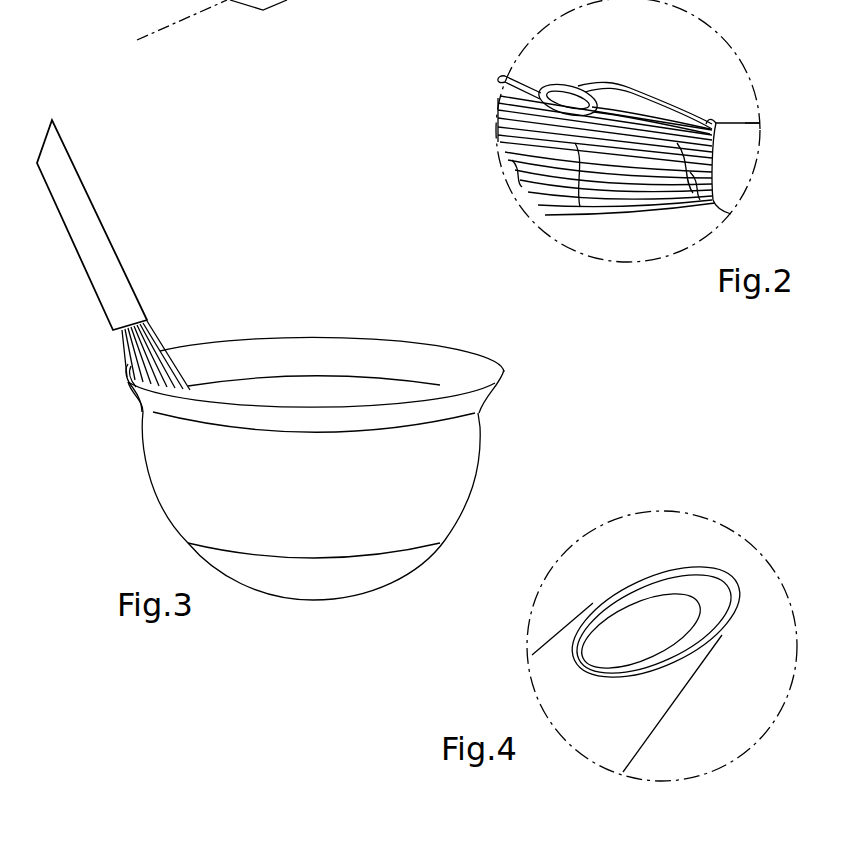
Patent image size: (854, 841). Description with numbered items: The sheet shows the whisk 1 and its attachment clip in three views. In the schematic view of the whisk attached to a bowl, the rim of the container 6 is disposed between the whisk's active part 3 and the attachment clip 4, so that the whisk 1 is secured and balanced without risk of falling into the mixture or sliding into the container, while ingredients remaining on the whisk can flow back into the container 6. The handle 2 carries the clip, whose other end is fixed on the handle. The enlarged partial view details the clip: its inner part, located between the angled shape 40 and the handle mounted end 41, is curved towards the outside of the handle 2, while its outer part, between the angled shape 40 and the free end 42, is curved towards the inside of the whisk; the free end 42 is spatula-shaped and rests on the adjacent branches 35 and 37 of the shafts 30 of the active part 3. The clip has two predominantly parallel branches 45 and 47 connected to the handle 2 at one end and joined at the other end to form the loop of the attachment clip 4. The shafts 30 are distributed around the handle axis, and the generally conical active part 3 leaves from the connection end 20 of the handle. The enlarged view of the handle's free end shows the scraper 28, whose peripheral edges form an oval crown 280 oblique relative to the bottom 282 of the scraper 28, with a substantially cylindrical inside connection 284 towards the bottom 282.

In FIG. 3, the whisk 1 is at (113, 257).
In FIG. 3, the handle 2 is at (98, 213).
In FIG. 2, the handle 2 is at (752, 123).
In FIG. 3, the active part 3 is at (150, 325).
In FIG. 2, the active part 3 is at (576, 180).
In FIG. 3, the attachment clip 4 is at (127, 380).
In FIG. 2, the attachment clip 4 is at (580, 77).
In FIG. 3, the container 6 is at (488, 438).
In FIG. 2, the connection end 20 is at (728, 143).
In FIG. 4, the scraper 28 is at (652, 597).
In FIG. 4, the oval crown 280 is at (680, 572).
In FIG. 4, the bottom 282 is at (620, 657).
In FIG. 4, the connection 284 is at (717, 620).
In FIG. 2, the shafts 30 is at (517, 182).
In FIG. 2, the adjacent branch 35 is at (510, 92).
In FIG. 2, the adjacent branch 37 is at (516, 78).
In FIG. 2, the angled shape 40 is at (643, 100).
In FIG. 2, the handle mounted end 41 is at (718, 118).
In FIG. 2, the free end 42 is at (545, 80).
In FIG. 2, the parallel branch 45 is at (693, 182).
In FIG. 2, the parallel branch 47 is at (668, 108).